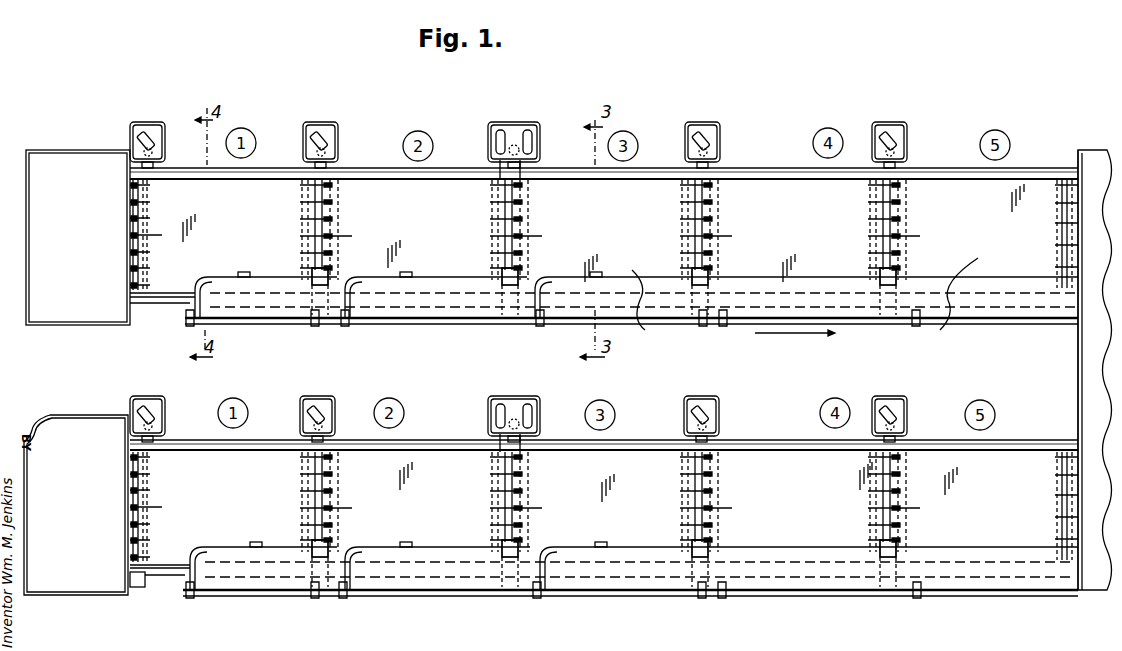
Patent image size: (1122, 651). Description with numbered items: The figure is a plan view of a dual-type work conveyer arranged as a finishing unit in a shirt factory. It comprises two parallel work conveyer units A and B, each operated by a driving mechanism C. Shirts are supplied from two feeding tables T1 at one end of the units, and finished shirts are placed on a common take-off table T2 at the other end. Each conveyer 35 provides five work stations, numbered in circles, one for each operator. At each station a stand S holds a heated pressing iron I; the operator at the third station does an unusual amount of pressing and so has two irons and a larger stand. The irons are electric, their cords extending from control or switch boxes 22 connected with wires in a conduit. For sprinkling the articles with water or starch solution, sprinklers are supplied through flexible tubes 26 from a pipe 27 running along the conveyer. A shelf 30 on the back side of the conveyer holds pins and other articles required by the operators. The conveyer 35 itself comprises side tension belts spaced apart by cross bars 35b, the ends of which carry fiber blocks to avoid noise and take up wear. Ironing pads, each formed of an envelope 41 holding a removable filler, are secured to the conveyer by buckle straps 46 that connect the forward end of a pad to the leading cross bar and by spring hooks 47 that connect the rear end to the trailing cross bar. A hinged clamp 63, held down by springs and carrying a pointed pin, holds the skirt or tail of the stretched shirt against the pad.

The pressing iron I is at (145, 122).
The stand S is at (148, 122).
The work conveyer unit A is at (785, 192).
The work conveyer unit B is at (780, 465).
The driving mechanism C is at (1075, 380).
The feeding table T1 is at (77, 372).
The take-off table T2 is at (1095, 370).
The control or switch box 22 is at (327, 271).
The flexible tube 26 is at (236, 279).
The pipe 27 is at (557, 325).
The shelf 30 is at (478, 290).
The conveyer 35 is at (476, 268).
The cross bar 35b is at (702, 220).
The envelope 41 is at (297, 300).
The buckle strap 46 is at (305, 226).
The spring hook 47 is at (520, 220).
The hinged clamp 63 is at (533, 240).